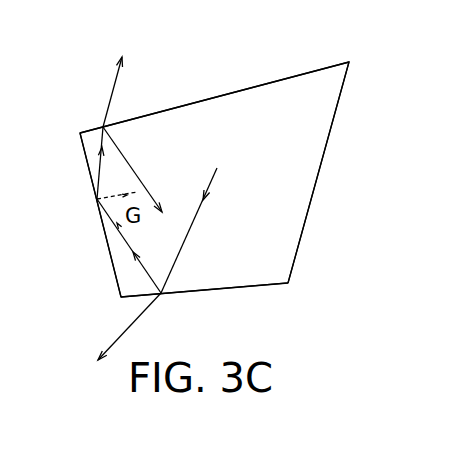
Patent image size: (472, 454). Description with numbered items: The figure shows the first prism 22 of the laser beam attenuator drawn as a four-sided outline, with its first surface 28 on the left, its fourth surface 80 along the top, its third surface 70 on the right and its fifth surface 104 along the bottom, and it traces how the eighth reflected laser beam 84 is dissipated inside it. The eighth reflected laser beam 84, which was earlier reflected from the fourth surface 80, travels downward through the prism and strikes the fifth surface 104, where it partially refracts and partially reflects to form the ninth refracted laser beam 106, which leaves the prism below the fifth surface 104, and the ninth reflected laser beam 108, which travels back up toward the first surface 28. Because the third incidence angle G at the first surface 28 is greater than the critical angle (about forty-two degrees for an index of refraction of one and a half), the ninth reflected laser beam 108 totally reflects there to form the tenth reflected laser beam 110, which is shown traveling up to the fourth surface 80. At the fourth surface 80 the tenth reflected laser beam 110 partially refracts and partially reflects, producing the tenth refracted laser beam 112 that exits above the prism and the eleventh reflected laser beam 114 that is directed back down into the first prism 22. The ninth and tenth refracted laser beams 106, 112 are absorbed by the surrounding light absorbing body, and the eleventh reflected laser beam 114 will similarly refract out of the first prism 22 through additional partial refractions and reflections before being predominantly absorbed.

The first prism 22 is at (293, 143).
The first surface 28 is at (113, 268).
The third surface 70 is at (304, 227).
The fourth surface 80 is at (320, 67).
The eighth reflected laser beam 84 is at (220, 172).
The fifth surface 104 is at (259, 287).
The ninth refracted laser beam 106 is at (130, 325).
The ninth reflected laser beam 108 is at (120, 237).
The tenth reflected laser beam 110 is at (103, 142).
The tenth refracted laser beam 112 is at (113, 92).
The eleventh reflected laser beam 114 is at (125, 157).